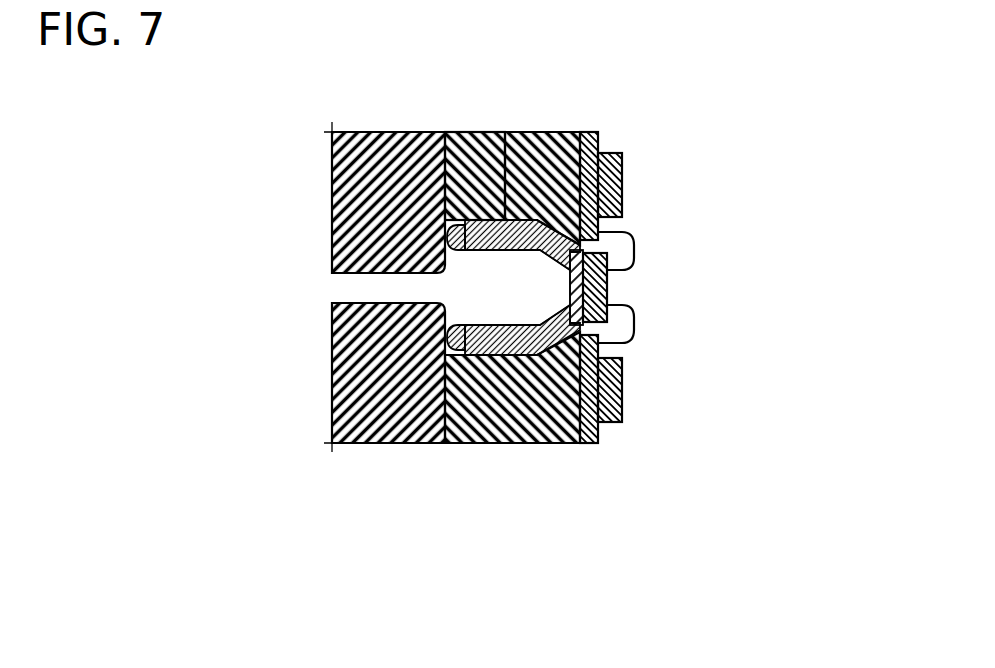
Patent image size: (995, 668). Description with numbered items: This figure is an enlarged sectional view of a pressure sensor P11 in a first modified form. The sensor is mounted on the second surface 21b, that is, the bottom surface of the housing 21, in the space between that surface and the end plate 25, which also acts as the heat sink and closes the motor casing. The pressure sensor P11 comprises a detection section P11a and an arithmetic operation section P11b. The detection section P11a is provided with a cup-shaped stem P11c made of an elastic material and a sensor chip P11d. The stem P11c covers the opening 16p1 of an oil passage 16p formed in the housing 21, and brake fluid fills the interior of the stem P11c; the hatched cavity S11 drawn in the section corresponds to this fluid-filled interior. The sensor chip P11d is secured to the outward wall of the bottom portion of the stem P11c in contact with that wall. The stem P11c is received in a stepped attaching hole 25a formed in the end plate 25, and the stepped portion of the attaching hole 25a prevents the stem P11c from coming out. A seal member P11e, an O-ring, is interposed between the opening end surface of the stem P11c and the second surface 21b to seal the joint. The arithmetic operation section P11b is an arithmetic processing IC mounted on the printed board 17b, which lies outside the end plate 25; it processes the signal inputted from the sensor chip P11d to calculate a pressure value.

The housing 21 is at (335, 251).
The second surface 21b is at (457, 136).
The end plate 25 is at (537, 150).
The stepped attaching hole 25a is at (510, 280).
The printed board 17b is at (588, 150).
The oil passage 16p is at (380, 303).
The opening of oil passage 16p1 is at (445, 274).
The space S11 is at (513, 297).
The pressure sensor P11 is at (743, 287).
The detection section P11a is at (705, 287).
The arithmetic operation section P11b is at (622, 388).
The stem P11c is at (607, 293).
The sensor chip P11d is at (607, 283).
The seal member P11e is at (449, 352).